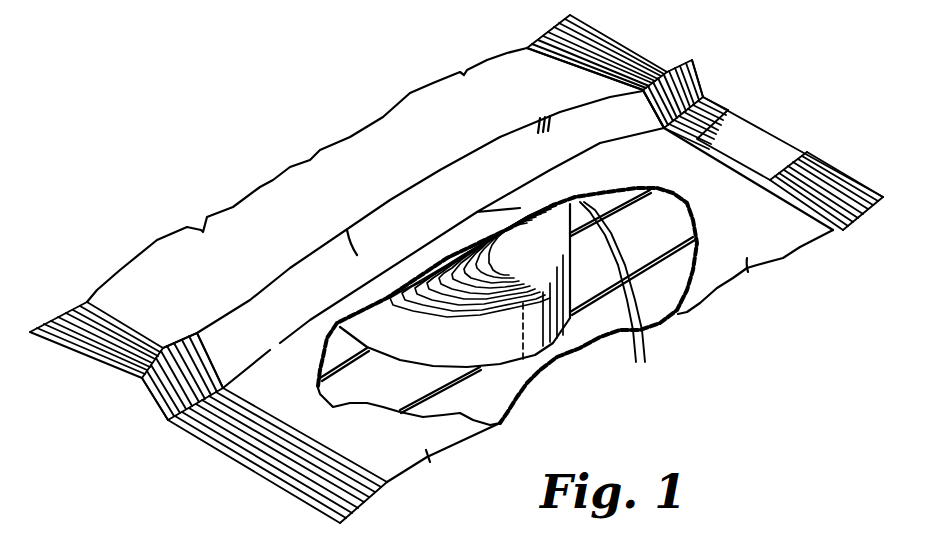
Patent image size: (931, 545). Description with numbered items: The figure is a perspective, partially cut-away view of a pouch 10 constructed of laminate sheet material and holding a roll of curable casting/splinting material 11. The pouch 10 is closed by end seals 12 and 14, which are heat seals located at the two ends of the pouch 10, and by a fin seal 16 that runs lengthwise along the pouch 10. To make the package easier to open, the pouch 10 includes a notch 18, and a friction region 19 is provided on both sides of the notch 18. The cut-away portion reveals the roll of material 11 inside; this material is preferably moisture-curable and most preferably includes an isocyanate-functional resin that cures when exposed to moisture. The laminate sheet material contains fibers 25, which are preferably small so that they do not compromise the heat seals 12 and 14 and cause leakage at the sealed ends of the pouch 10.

The pouch 10 is at (323, 90).
The roll of curable casting/splinting material 11 is at (507, 343).
The end seal 12 is at (615, 52).
The end seal 14 is at (253, 460).
The fin seal 16 is at (420, 203).
The notch 18 is at (763, 133).
The friction region 19 is at (783, 152).
The fibers 25 is at (621, 297).